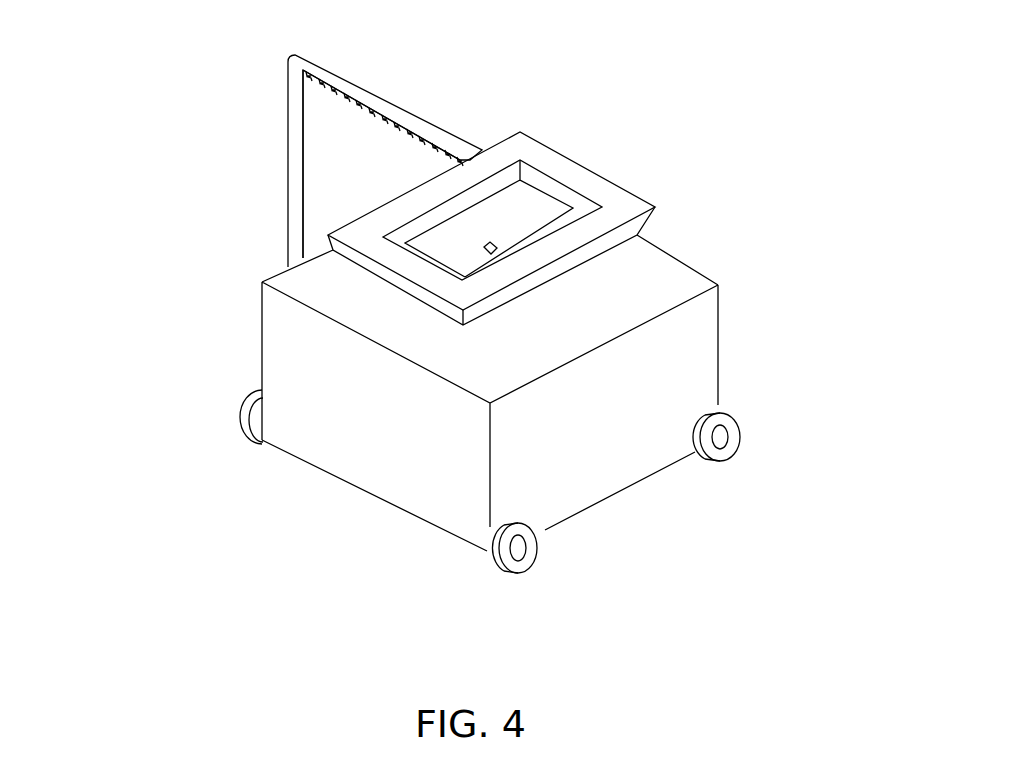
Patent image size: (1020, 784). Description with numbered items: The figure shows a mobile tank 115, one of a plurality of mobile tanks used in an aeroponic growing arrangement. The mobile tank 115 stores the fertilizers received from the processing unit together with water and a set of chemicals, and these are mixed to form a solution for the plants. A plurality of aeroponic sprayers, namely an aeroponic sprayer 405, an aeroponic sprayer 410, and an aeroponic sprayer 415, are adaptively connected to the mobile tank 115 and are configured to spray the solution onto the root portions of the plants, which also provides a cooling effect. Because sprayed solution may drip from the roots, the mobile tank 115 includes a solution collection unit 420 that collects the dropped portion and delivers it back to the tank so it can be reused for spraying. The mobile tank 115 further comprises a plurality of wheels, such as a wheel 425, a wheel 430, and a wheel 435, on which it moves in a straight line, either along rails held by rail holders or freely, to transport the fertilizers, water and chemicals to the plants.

The mobile tank 115 is at (519, 66).
The aeroponic sprayer 405 is at (315, 90).
The aeroponic sprayer 410 is at (358, 112).
The aeroponic sprayer 415 is at (403, 135).
The solution collection unit 420 is at (373, 250).
The wheel 425 is at (240, 420).
The wheel 430 is at (482, 550).
The wheel 435 is at (730, 418).